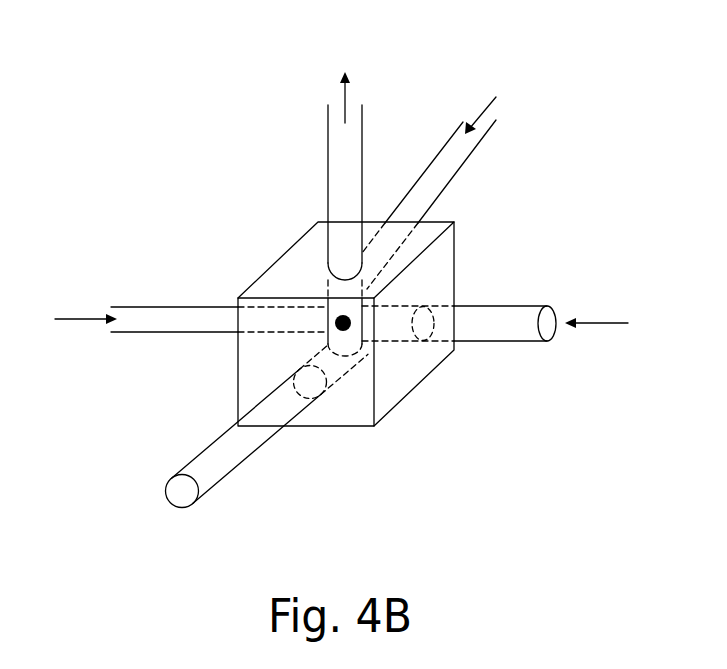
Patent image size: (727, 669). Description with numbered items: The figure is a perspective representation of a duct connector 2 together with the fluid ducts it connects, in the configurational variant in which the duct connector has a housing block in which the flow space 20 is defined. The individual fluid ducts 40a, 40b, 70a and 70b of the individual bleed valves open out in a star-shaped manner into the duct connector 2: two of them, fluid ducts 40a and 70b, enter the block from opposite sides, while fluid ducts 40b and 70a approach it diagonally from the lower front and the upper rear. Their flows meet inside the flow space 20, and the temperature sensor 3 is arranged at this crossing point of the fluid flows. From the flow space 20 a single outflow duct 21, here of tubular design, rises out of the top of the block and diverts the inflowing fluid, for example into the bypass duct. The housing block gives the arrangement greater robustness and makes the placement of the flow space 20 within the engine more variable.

The duct connector 2 is at (259, 231).
The flow space 20 is at (377, 403).
The temperature sensor 3 is at (350, 327).
The outflow duct 21 is at (353, 122).
The fluid duct 70a is at (455, 155).
The fluid duct 70b is at (525, 330).
The fluid duct 40a is at (150, 318).
The fluid duct 40b is at (240, 450).